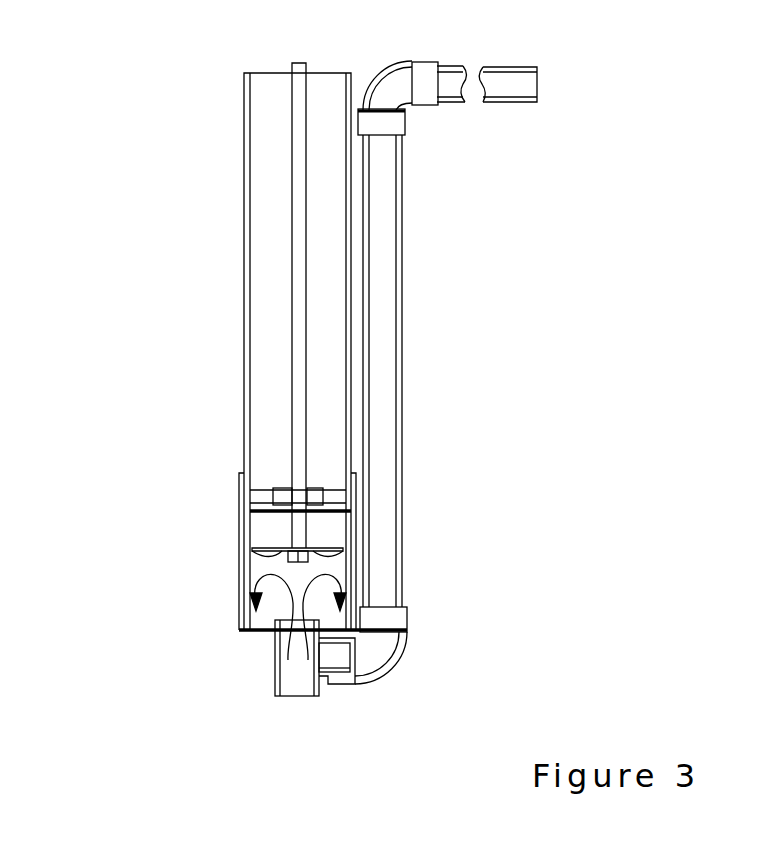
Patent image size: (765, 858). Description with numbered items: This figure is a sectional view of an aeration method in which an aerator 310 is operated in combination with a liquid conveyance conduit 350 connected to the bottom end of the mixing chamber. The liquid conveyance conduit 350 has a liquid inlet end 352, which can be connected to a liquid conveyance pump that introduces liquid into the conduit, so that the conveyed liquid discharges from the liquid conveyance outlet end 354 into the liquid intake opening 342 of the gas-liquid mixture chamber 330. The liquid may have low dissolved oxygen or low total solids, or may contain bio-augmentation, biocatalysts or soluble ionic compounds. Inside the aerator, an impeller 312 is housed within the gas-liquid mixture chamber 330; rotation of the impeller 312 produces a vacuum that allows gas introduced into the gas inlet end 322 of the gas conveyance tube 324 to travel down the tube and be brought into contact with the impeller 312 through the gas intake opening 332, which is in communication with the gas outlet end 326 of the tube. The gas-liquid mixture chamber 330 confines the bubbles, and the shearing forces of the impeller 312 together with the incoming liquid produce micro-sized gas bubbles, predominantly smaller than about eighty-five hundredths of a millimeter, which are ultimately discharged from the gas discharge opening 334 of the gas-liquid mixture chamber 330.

The aerator 310 is at (165, 230).
The impeller 312 is at (282, 546).
The gas inlet end 322 is at (273, 92).
The gas conveyance tube 324 is at (245, 345).
The gas outlet end 326 is at (273, 508).
The gas-liquid mixture chamber 330 is at (238, 588).
The gas intake opening 332 is at (263, 522).
The gas discharge opening 334 is at (252, 632).
The liquid intake opening 342 is at (275, 677).
The liquid conveyance conduit 350 is at (400, 347).
The liquid inlet end 352 is at (538, 83).
The liquid conveyance outlet end 354 is at (327, 658).